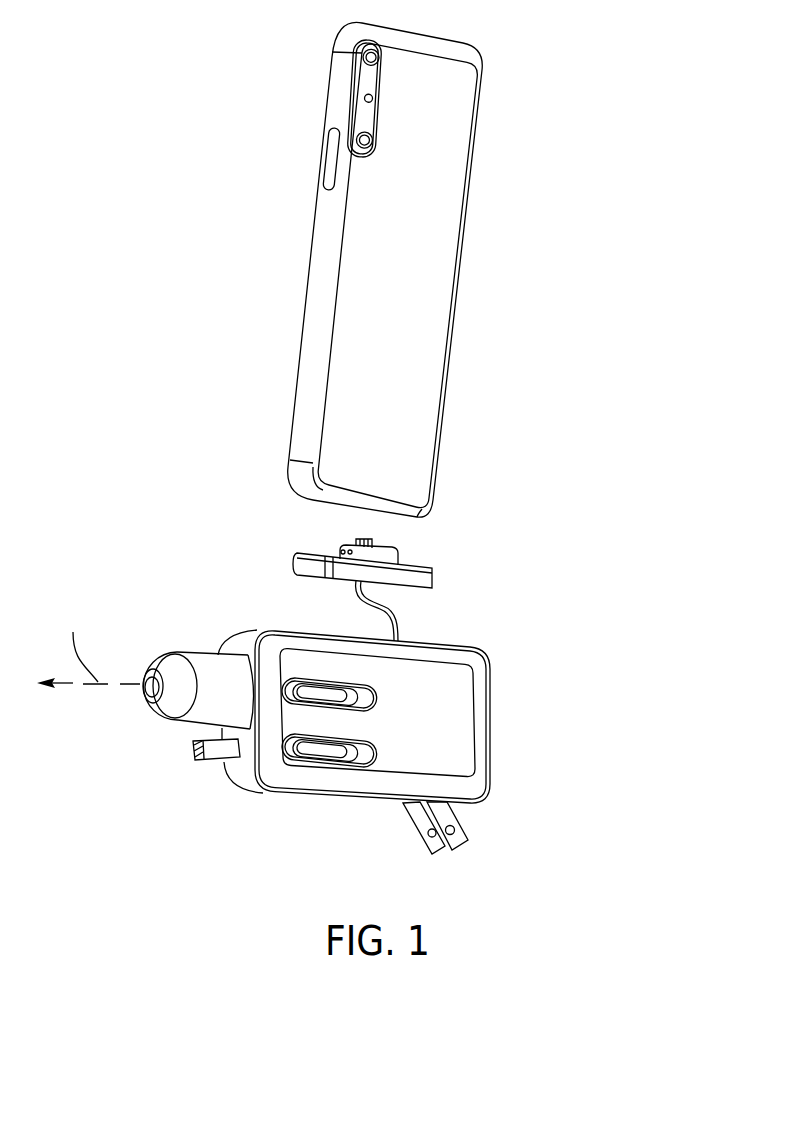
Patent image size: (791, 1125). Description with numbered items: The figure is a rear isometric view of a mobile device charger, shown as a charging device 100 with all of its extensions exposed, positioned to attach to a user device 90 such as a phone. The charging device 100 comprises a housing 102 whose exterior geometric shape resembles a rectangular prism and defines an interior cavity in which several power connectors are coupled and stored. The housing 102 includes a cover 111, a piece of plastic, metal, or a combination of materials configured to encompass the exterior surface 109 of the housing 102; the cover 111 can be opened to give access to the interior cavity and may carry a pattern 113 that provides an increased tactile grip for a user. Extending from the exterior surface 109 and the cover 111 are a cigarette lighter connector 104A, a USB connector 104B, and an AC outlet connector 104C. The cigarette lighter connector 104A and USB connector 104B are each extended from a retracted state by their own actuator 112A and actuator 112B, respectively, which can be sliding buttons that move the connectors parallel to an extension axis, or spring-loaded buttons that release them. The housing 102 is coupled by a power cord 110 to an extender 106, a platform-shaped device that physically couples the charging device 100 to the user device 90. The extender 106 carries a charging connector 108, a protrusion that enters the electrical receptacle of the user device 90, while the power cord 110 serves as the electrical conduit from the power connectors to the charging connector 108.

The user device 90 is at (322, 283).
The charging device 100 is at (573, 362).
The housing 102 is at (280, 605).
The extender 106 is at (432, 571).
The charging connector 108 is at (377, 550).
The power cord 110 is at (398, 624).
The cover 111 is at (467, 682).
The pattern 113 is at (443, 755).
The exterior surface 109 is at (257, 643).
The actuator 112A is at (313, 690).
The actuator 112B is at (337, 745).
The cigarette lighter connector 104A is at (180, 700).
The USB connector 104B is at (220, 767).
The AC outlet connector 104C is at (455, 820).